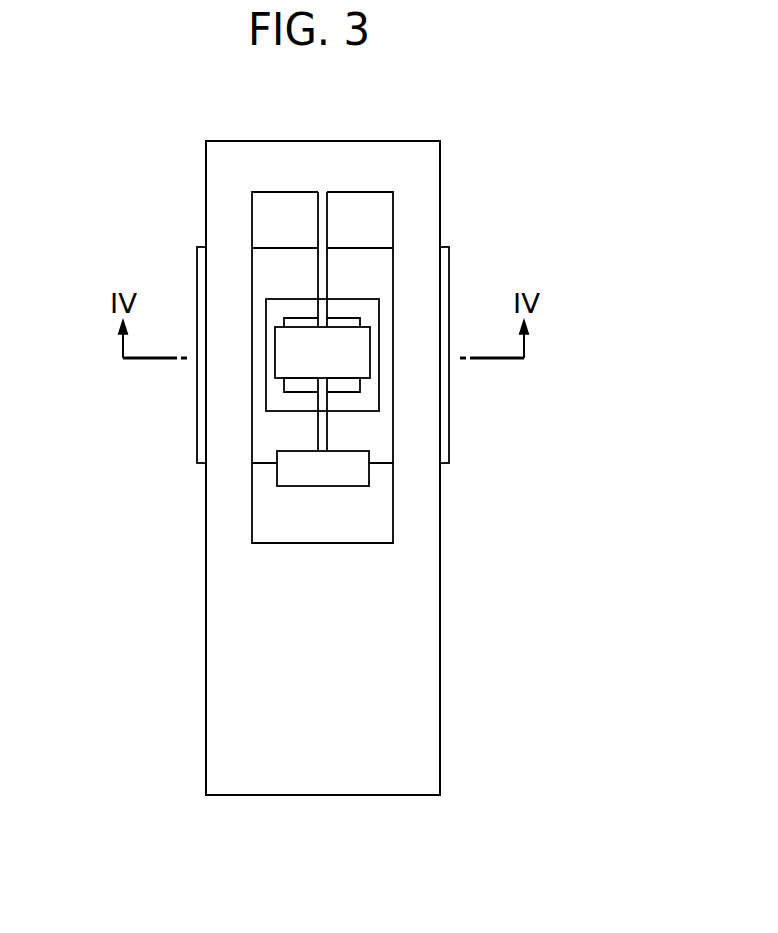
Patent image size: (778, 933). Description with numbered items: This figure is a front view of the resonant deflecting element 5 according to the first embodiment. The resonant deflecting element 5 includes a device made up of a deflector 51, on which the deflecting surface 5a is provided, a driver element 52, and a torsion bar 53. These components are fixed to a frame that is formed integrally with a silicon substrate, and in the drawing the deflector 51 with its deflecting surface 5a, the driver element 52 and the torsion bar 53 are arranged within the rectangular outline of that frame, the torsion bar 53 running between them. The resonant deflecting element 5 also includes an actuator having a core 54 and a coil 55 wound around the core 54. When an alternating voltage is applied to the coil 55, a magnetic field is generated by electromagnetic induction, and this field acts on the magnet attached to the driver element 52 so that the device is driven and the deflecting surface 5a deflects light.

The resonant deflecting element 5 is at (148, 119).
The deflecting surface 5a is at (327, 530).
The deflector 51 is at (290, 477).
The driver element 52 is at (285, 338).
The torsion bar 53 is at (322, 219).
The core 54 is at (342, 322).
The coil 55 is at (445, 448).